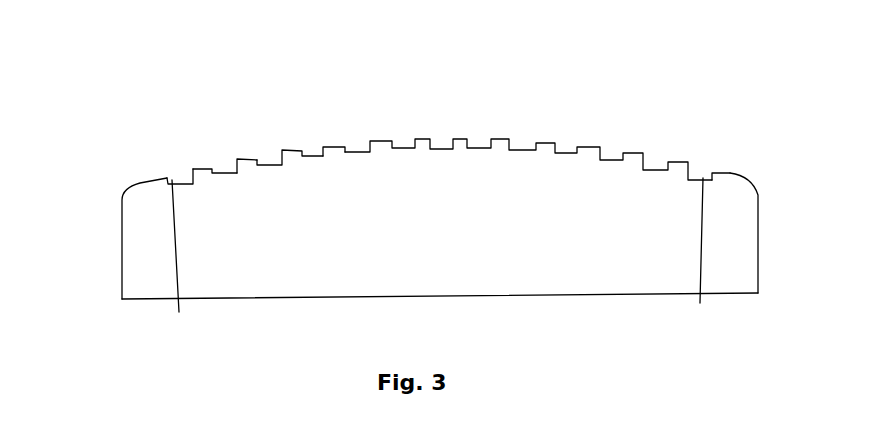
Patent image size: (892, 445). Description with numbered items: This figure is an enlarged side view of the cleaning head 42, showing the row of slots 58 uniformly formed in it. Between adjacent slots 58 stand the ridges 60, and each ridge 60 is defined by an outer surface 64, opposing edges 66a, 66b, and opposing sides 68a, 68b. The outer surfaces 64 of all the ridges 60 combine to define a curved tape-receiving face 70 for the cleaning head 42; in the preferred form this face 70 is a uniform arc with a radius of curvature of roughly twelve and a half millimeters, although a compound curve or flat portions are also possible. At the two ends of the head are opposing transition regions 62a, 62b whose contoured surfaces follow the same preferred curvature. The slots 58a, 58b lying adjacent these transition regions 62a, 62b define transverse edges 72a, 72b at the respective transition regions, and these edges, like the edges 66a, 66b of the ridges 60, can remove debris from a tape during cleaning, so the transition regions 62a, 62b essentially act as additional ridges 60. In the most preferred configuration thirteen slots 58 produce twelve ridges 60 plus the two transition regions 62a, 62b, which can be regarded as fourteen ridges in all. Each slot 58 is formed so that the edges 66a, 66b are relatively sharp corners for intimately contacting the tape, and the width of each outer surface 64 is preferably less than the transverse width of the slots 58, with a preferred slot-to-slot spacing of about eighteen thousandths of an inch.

The cleaning head 42 is at (739, 76).
The slots 58 is at (610, 159).
The slot adjacent first transition region 58a is at (185, 261).
The slot adjacent second transition region 58b is at (701, 256).
The ridges 60 is at (493, 147).
The first transition region 62a is at (140, 182).
The second transition region 62b is at (733, 170).
The outer surface 64 is at (335, 147).
The first edge 66a is at (325, 147).
The second edge 66b is at (345, 147).
The first side 68a is at (325, 153).
The second side 68b is at (347, 151).
The tape-receiving face 70 is at (249, 157).
The first transverse edge 72a is at (168, 180).
The second transverse edge 72b is at (712, 172).